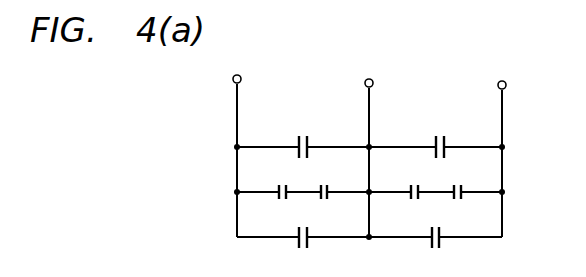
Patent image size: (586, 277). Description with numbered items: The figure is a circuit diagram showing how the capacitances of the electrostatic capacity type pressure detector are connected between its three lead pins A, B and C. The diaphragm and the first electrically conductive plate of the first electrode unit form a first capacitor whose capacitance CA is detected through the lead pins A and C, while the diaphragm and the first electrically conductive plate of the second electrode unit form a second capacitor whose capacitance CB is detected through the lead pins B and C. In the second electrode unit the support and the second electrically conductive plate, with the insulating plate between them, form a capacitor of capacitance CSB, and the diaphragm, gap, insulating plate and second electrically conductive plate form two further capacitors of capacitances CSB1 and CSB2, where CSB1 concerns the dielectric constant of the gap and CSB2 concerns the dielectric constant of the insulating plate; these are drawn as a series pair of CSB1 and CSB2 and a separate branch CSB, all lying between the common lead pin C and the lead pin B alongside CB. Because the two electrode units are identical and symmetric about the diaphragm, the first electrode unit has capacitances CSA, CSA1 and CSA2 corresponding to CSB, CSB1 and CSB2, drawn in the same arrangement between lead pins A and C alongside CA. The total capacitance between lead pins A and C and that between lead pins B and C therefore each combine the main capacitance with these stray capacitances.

The lead pin A is at (236, 69).
The lead pin B is at (501, 73).
The lead pin C is at (368, 72).
The capacitance of first capacitor CA is at (301, 135).
The capacitance of second capacitor CB is at (440, 135).
The stray capacitance of first electrode unit gap CSA1 is at (278, 178).
The stray capacitance of first electrode unit insulating plate CSA2 is at (330, 178).
The stray capacitance of first electrode unit support CSA is at (301, 225).
The stray capacitance of gap CSB1 is at (405, 178).
The stray capacitance of insulating plate CSB2 is at (461, 178).
The stray capacitance of support CSB is at (436, 225).